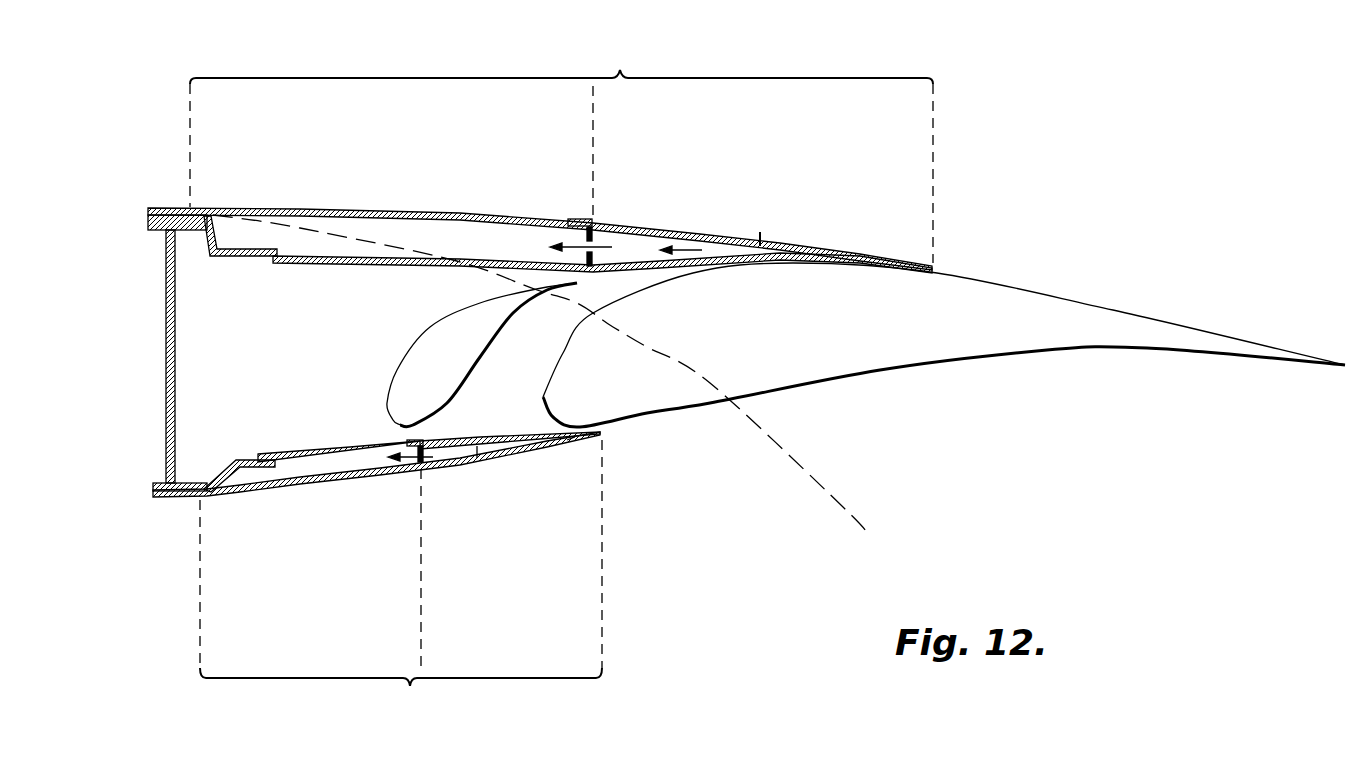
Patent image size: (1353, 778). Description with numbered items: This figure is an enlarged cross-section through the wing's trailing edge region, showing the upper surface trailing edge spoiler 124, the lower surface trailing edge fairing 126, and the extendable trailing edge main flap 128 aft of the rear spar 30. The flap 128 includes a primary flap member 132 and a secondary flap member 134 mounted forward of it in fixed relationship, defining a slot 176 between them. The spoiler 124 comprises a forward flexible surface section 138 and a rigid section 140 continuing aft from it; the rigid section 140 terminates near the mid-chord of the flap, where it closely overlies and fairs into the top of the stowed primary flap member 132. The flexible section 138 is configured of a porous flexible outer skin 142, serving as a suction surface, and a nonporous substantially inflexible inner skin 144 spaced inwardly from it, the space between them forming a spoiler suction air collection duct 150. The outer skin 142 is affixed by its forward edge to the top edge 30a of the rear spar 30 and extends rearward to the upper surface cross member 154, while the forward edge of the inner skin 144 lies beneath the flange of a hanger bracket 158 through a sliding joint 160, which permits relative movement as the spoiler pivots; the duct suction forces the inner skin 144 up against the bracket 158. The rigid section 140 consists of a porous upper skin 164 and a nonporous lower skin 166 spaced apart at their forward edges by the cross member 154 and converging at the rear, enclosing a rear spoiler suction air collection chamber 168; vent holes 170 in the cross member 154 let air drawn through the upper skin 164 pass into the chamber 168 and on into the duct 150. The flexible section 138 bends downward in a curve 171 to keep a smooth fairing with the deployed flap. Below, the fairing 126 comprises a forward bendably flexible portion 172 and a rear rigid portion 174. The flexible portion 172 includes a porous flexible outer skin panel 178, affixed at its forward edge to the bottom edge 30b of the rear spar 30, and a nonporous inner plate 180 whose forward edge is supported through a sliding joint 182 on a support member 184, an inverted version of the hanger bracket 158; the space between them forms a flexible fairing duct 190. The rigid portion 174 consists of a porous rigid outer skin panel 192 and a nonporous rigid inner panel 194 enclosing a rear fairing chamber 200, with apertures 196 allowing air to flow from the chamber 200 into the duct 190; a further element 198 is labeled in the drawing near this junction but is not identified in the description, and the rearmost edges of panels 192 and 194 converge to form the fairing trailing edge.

The trailing edge spoiler 124 is at (818, 56).
The flexible surface section 138 is at (440, 157).
The rigid section 140 is at (848, 173).
The outer skin 142 is at (540, 224).
The spoiler suction air collection duct 150 is at (540, 225).
The upper surface cross member 154 is at (575, 219).
The vent holes 170 is at (593, 241).
The lower skin 166 is at (633, 266).
The rear spoiler suction air collection chamber 168 is at (761, 243).
The upper skin 164 is at (812, 245).
The top edge of rear spar 30a is at (185, 235).
The hanger bracket 158 is at (207, 256).
The sliding joint 160 is at (602, 277).
The inner skin 144 is at (356, 264).
The rear spar 30 is at (178, 352).
The bottom edge of rear spar 30b is at (153, 500).
The secondary flap member 134 is at (412, 368).
The slot 176 is at (545, 348).
The primary flap member 132 is at (944, 368).
The trailing edge main flap 128 is at (678, 417).
The curve 171 is at (866, 522).
The support member 184 is at (234, 449).
The sliding joint 182 is at (250, 456).
The inner plate 180 is at (318, 448).
The apertures 196 is at (428, 446).
The inner panel 194 is at (497, 439).
The flexible fairing duct 190 is at (376, 491).
The outer skin panel 178 is at (327, 488).
The fairing sliding joint 198 is at (413, 473).
The rear fairing chamber 200 is at (480, 452).
The outer skin panel 192 is at (567, 438).
The flexible portion 172 is at (390, 621).
The rigid portion 174 is at (595, 621).
The trailing edge fairing 126 is at (505, 747).